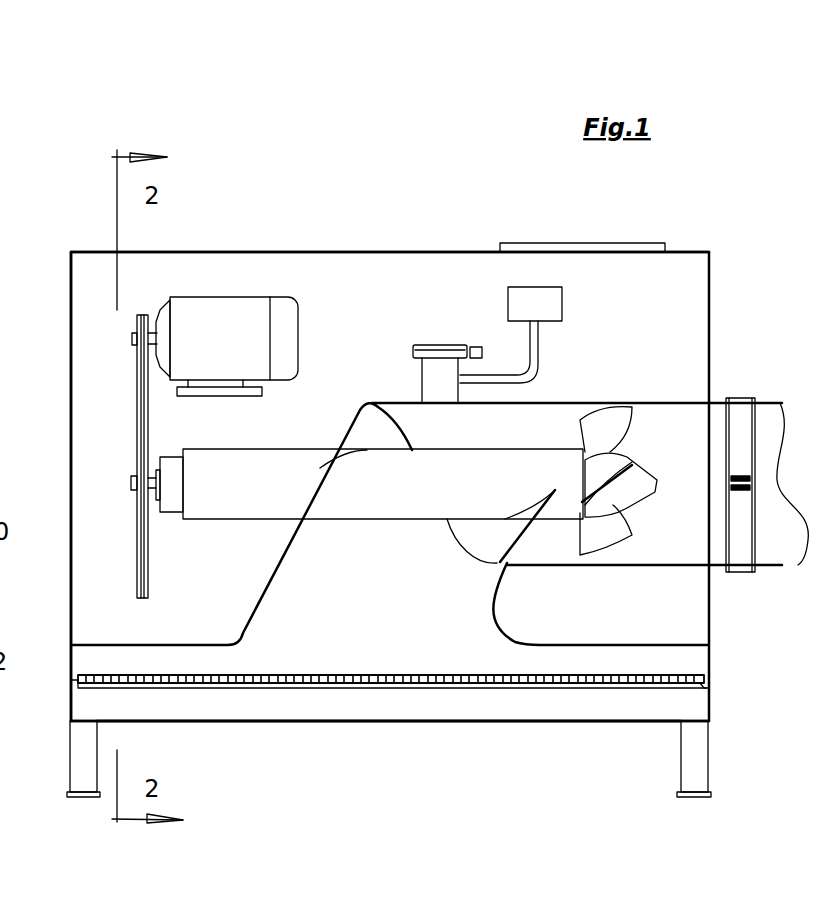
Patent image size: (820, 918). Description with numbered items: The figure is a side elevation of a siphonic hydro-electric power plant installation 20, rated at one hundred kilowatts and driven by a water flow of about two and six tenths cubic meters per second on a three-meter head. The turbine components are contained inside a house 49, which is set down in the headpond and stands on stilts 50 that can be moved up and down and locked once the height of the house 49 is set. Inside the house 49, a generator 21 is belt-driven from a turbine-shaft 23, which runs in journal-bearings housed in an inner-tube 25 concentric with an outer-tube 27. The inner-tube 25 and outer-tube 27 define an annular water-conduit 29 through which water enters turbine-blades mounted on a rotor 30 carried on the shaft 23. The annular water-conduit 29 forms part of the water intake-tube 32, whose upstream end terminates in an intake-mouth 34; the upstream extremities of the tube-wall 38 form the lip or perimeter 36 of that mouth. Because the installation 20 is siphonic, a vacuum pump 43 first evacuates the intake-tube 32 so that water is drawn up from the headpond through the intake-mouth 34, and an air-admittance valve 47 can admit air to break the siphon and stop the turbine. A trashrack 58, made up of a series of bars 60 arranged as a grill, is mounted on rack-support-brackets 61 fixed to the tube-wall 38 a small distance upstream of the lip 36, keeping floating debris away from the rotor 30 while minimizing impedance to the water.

The siphonic hydro-electric power plant installation 20 is at (216, 120).
The generator 21 is at (223, 346).
The turbine-shaft 23 is at (131, 485).
The inner-tube 25 is at (497, 460).
The outer-tube 27 is at (556, 403).
The annular water-conduit 29 is at (560, 425).
The rotor 30 is at (605, 523).
The water intake-tube 32 is at (222, 486).
The intake-mouth 34 is at (289, 748).
The lip or perimeter 36 is at (577, 722).
The tube-wall 38 is at (253, 603).
The vacuum pump 43 is at (535, 302).
The air-admittance valve 47 is at (478, 343).
The house 49 is at (300, 252).
The stilts 50 is at (80, 760).
The trashrack 58 is at (428, 716).
The bars 60 is at (485, 684).
The rack-support-brackets 61 is at (703, 687).